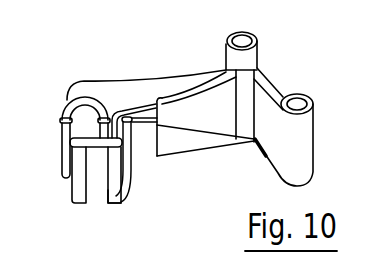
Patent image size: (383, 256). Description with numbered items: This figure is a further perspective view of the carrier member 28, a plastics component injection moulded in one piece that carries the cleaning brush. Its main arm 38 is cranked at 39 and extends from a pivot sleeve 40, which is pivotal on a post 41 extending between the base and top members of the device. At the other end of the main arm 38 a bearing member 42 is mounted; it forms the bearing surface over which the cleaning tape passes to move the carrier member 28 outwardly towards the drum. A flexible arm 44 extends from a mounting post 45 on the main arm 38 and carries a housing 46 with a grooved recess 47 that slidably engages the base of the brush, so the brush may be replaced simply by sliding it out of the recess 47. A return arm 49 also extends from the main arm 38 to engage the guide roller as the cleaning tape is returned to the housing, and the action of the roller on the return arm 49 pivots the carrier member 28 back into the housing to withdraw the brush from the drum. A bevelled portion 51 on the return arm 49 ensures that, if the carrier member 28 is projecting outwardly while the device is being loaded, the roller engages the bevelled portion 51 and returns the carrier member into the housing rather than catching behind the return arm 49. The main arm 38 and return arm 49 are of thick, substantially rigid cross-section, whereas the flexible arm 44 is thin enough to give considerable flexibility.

The carrier member 28 is at (186, 49).
The main arm 38 is at (147, 88).
The crank 39 is at (100, 97).
The pivot sleeve 40 is at (313, 155).
The post 41 is at (297, 101).
The bearing member 42 is at (65, 151).
The flexible arm 44 is at (137, 178).
The mounting post 45 is at (259, 58).
The housing 46 is at (114, 197).
The grooved recess 47 is at (99, 189).
The return arm 49 is at (199, 116).
The bevelled portion 51 is at (210, 137).